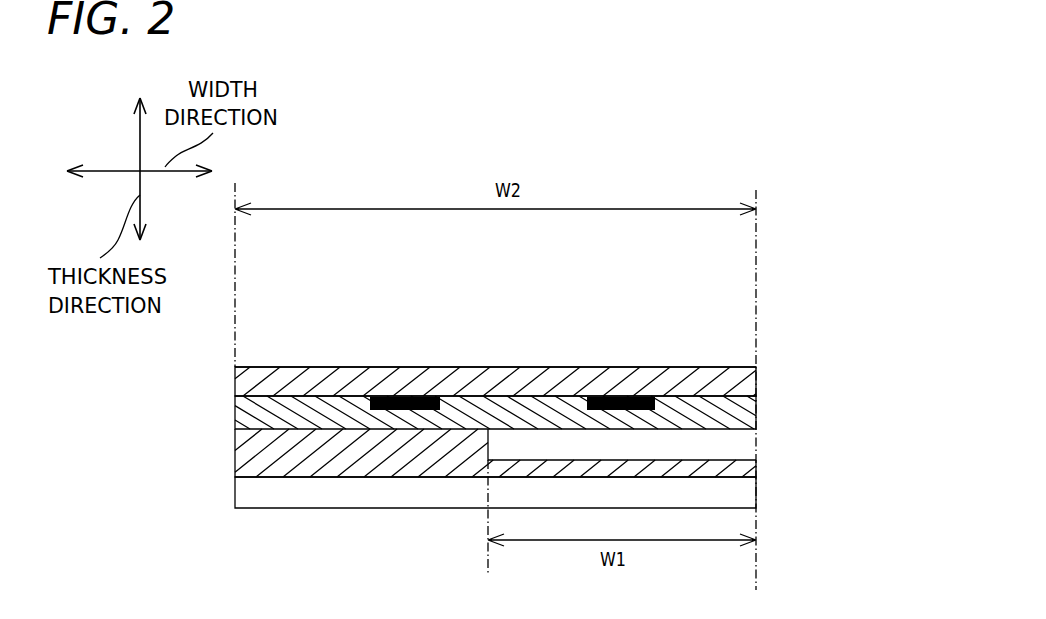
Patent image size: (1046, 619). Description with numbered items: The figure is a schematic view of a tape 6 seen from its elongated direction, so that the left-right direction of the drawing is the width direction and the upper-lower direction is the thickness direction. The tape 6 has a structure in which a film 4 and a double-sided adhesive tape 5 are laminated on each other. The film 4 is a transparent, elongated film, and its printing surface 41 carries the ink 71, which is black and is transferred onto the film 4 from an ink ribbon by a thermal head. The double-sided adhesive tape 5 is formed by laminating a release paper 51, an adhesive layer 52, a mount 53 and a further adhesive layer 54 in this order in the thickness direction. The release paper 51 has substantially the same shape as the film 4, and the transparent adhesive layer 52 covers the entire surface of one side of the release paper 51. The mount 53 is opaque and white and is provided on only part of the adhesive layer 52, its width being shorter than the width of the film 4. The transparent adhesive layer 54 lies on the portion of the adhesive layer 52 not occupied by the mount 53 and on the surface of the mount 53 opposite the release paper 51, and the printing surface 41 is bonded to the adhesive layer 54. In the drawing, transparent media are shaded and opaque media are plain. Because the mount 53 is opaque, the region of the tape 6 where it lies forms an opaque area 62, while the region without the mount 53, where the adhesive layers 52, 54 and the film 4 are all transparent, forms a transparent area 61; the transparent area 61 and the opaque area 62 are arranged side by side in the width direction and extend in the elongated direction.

The film 4 is at (730, 378).
The double-sided adhesive tape 5 is at (843, 397).
The tape 6 is at (798, 345).
The printing surface 41 is at (490, 399).
The release paper 51 is at (740, 488).
The adhesive layer 52 is at (740, 465).
The mount 53 is at (740, 443).
The adhesive layer 54 is at (730, 407).
The transparent area 61 is at (399, 347).
The opaque area 62 is at (674, 346).
The ink 71 is at (608, 396).